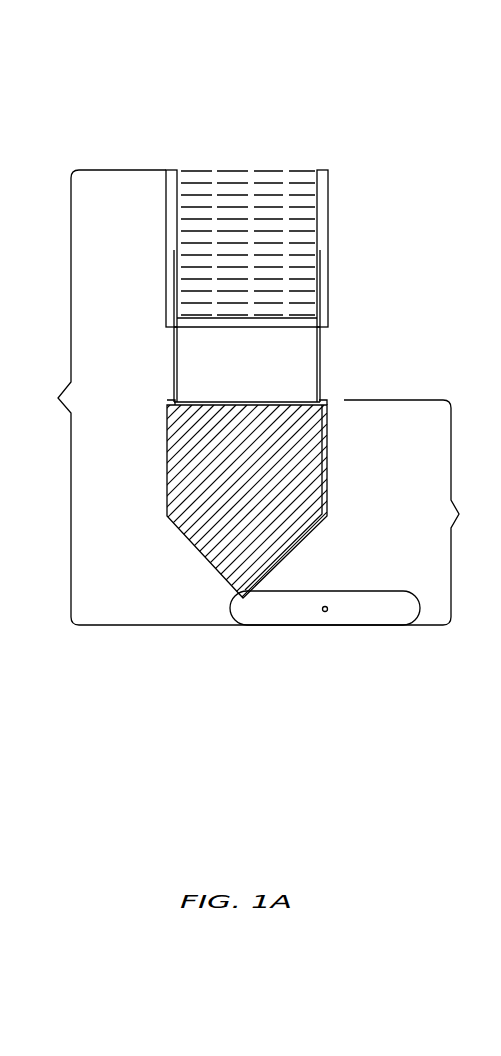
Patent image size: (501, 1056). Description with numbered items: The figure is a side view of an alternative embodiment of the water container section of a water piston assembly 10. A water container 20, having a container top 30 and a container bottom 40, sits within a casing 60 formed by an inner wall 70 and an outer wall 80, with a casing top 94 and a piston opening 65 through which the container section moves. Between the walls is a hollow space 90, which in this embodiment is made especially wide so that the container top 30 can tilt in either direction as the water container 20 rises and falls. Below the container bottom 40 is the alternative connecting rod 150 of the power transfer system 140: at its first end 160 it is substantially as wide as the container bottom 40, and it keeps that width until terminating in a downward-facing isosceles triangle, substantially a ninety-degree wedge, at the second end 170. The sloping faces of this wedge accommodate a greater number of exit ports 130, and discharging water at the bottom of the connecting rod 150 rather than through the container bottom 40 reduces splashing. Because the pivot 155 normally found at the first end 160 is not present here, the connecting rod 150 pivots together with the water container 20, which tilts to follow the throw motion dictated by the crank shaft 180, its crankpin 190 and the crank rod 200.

The water piston assembly 10 is at (248, 397).
The water container 20 is at (176, 345).
The container top 30 is at (173, 250).
The container bottom 40 is at (167, 399).
The casing 60 is at (346, 144).
The piston opening 65 is at (191, 152).
The inner wall 70 is at (314, 210).
The outer wall 80 is at (328, 206).
The hollow space 90 is at (174, 194).
The casing top 94 is at (495, 214).
The exit ports 130 is at (186, 546).
The power transfer system 140 is at (485, 514).
The connecting rod 150 is at (182, 452).
The pivot 155 is at (251, 616).
The first end 160 is at (167, 403).
The second end 170 is at (245, 607).
The crank shaft 180 is at (298, 627).
The crankpin 190 is at (328, 611).
The crank rod 200 is at (383, 615).